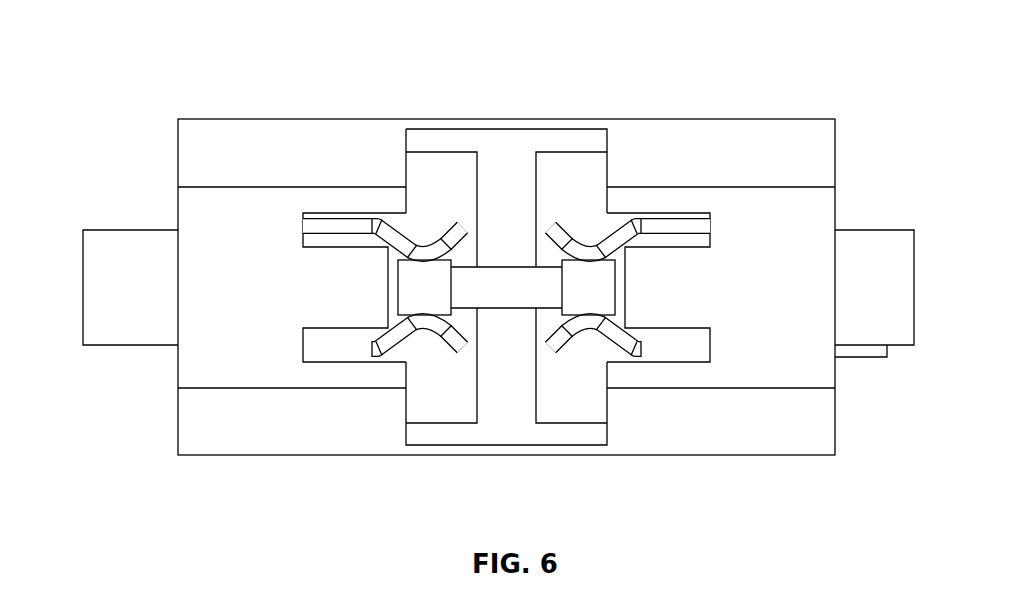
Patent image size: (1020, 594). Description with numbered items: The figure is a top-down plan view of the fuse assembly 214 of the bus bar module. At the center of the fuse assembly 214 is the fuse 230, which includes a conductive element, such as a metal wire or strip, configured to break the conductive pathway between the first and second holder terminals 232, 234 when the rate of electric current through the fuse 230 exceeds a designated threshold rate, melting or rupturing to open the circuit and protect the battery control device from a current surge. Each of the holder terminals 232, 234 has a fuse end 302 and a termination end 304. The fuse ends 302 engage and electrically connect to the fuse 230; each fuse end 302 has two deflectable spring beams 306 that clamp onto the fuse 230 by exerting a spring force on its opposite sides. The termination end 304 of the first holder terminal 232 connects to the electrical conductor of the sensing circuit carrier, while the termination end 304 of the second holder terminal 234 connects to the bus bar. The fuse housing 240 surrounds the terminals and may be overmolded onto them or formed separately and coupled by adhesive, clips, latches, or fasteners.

The fuse assembly 214 is at (368, 40).
The fuse 230 is at (465, 288).
The first holder terminal 232 is at (686, 233).
The second holder terminal 234 is at (322, 238).
The fuse housing 240 is at (645, 150).
The fuse end 302 is at (472, 364).
The termination end 304 is at (68, 333).
The deflectable spring beams 306 is at (408, 238).